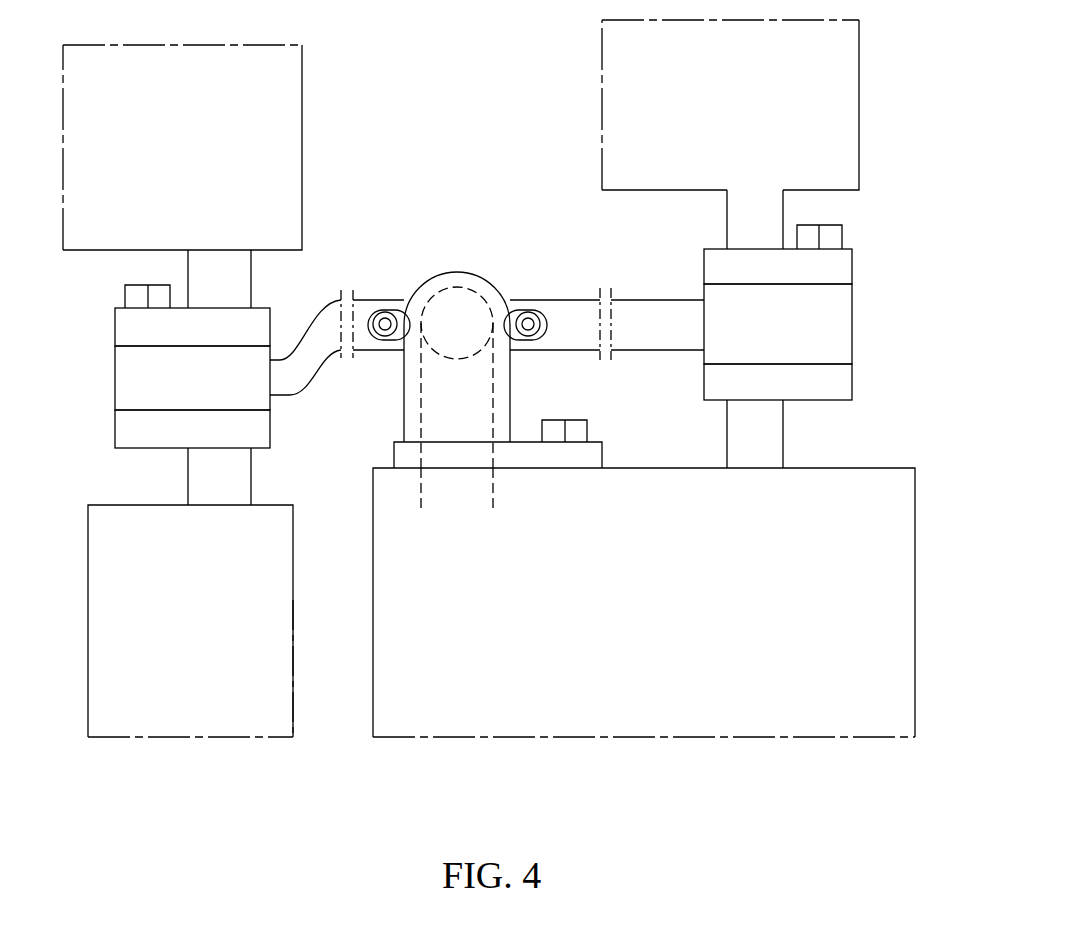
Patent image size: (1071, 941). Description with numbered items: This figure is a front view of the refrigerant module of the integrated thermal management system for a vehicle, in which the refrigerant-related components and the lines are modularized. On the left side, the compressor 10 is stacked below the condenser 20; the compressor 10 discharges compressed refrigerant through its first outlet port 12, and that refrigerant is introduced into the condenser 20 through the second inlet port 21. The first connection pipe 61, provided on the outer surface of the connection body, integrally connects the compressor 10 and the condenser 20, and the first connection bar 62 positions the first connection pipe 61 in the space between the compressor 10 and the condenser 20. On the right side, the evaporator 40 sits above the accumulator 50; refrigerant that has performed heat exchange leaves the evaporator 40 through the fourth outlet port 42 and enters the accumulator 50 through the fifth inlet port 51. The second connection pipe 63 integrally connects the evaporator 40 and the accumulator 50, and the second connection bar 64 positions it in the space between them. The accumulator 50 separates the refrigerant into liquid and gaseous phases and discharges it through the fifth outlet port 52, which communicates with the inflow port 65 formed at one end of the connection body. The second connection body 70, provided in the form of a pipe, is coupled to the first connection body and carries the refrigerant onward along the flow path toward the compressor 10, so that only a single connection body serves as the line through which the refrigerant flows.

The compressor 10 is at (168, 737).
The first outlet port 12 is at (125, 430).
The condenser 20 is at (302, 115).
The second inlet port 21 is at (125, 326).
The evaporator 40 is at (859, 90).
The fourth outlet port 42 is at (852, 267).
The accumulator 50 is at (590, 737).
The fifth inlet port 51 is at (852, 382).
The fifth outlet port 52 is at (420, 507).
The first connection pipe 61 is at (125, 377).
The first connection bar 62 is at (366, 298).
The second connection pipe 63 is at (852, 328).
The second connection bar 64 is at (555, 305).
The inflow port 65 is at (420, 458).
The second connection body 70 is at (512, 387).